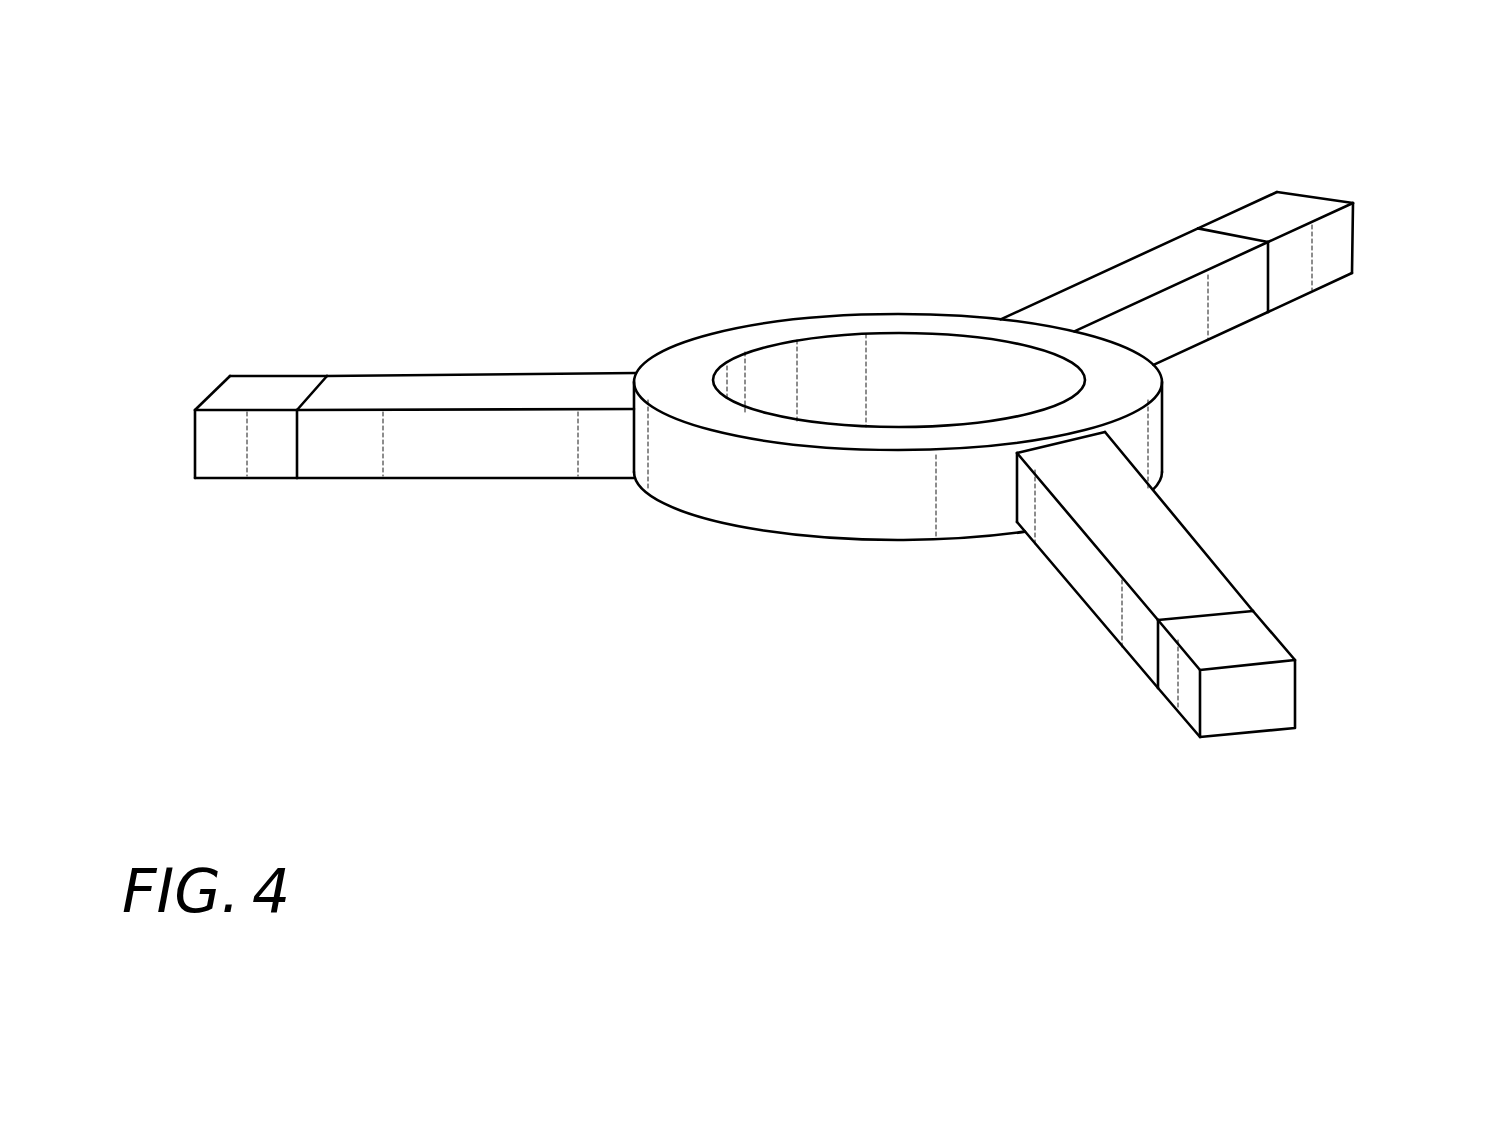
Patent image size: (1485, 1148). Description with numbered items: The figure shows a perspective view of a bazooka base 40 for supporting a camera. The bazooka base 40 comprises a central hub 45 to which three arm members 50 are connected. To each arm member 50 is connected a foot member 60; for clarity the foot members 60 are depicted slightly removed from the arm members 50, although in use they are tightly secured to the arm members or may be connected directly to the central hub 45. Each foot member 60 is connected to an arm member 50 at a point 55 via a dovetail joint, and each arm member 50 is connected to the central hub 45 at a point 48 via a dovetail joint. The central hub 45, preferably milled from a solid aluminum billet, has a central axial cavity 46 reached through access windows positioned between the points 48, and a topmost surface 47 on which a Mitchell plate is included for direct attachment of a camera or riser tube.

The bazooka base 40 is at (653, 682).
The central hub 45 is at (853, 397).
The central axial cavity 46 is at (822, 360).
The topmost surface 47 is at (673, 370).
The point 48 is at (1052, 323).
The arm member 50 is at (350, 457).
The point 55 is at (297, 480).
The foot member 60 is at (228, 457).